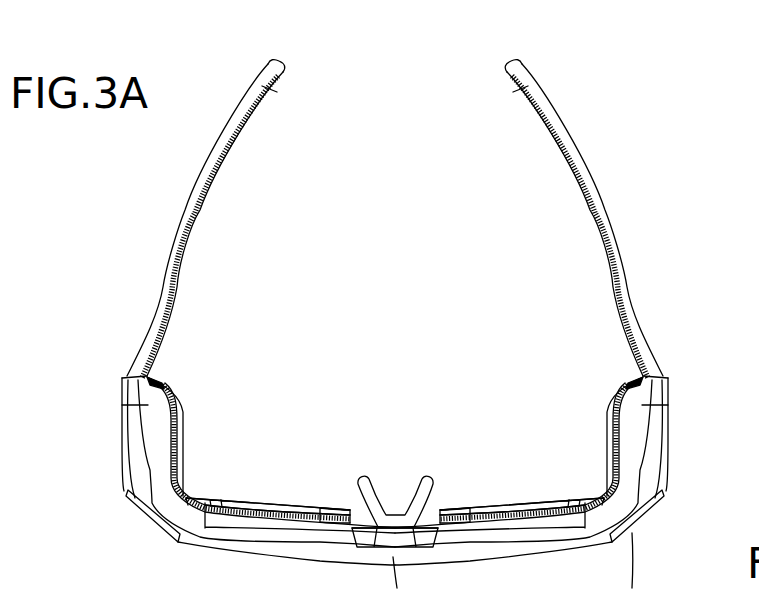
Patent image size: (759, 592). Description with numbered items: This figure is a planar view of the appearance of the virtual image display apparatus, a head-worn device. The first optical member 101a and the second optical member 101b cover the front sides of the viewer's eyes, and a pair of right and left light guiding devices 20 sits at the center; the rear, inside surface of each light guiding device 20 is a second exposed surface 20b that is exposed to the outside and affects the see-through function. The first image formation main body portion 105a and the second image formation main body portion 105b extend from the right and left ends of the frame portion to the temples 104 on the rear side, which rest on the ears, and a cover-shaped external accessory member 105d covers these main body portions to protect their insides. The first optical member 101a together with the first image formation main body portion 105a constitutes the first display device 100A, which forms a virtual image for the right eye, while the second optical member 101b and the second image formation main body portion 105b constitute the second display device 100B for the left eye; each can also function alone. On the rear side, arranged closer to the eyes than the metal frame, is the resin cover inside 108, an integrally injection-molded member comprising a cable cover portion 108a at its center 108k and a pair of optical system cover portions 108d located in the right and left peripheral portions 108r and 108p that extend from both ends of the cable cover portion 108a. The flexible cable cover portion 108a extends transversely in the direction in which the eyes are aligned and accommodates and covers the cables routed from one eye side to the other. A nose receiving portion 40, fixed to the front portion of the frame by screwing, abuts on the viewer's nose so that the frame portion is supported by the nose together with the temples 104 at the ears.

The temple 104 is at (190, 198).
The cover inside 108 is at (350, 385).
The first image formation main body portion 105a is at (133, 489).
The second image formation main body portion 105b is at (654, 498).
The external accessory member 105d is at (150, 511).
The optical system cover portion 108d is at (163, 408).
The right peripheral portion 108r is at (219, 314).
The left peripheral portion 108p is at (586, 320).
The first display device 100A is at (271, 398).
The second display device 100B is at (545, 398).
The center 108k is at (397, 440).
The cable cover portion 108a is at (355, 533).
The nose receiving portion 40 is at (417, 487).
The first optical member 101a is at (285, 493).
The second optical member 101b is at (518, 493).
The light guiding device 20 is at (395, 469).
The second exposed surface 20b is at (315, 510).